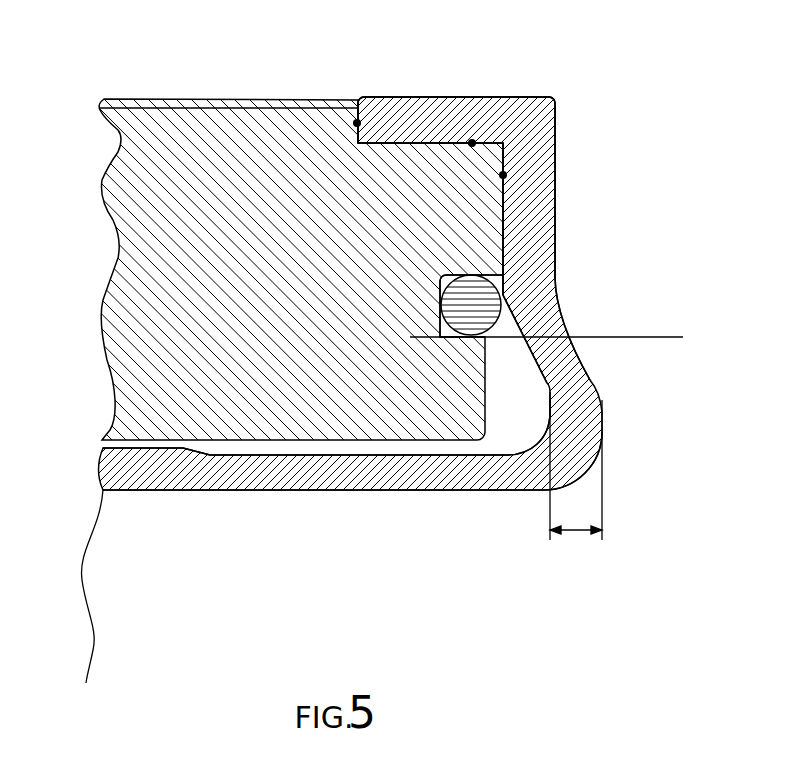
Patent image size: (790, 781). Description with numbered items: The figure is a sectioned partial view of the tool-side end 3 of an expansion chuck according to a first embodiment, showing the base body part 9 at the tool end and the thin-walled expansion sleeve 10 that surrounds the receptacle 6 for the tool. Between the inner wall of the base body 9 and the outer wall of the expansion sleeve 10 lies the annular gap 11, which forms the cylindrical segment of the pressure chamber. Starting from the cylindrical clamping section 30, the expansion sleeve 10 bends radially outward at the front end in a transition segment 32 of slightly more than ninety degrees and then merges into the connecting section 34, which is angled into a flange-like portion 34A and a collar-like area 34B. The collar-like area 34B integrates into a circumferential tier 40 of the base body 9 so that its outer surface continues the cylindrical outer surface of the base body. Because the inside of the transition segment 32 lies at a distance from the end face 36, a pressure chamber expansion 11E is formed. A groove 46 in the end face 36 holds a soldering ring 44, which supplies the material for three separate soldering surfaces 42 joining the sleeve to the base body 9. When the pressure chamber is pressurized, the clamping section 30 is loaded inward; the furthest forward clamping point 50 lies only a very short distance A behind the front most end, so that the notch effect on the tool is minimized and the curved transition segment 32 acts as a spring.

The tool-side end 3 is at (577, 245).
The receptacle 6 is at (474, 621).
The base body part at the tool end 9 is at (230, 244).
The expansion sleeve 10 is at (327, 477).
The annular gap 11 is at (355, 447).
The pressure chamber expansion 11E is at (530, 395).
The cylindrical clamping section 30 is at (422, 472).
The transition segment 32 is at (657, 337).
The connecting section 34 is at (545, 173).
The flange-like portion 34A is at (538, 218).
The collar-like area 34B is at (445, 107).
The end face 36 is at (555, 307).
The circumferential tier 40 is at (420, 143).
The soldering surfaces 42 is at (357, 120).
The soldering ring 44 is at (468, 288).
The groove 46 is at (455, 333).
The clamping point 50 is at (530, 490).
The distance A is at (576, 470).